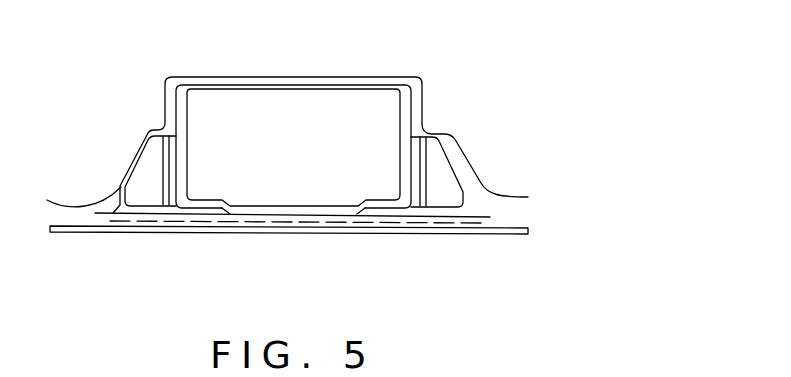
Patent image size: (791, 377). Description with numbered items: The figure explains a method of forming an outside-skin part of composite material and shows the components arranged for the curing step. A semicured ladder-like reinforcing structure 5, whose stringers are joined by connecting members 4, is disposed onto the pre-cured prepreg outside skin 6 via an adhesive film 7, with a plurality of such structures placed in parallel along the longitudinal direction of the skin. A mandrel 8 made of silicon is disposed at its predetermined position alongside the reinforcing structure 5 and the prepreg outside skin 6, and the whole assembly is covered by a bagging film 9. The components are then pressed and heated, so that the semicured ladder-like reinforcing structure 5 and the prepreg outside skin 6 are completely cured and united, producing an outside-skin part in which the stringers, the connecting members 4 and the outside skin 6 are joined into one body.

The connecting member 4 is at (335, 127).
The ladder-like reinforcing structure 5 is at (168, 207).
The prepreg outside skin 6 is at (346, 228).
The adhesive film 7 is at (271, 222).
The mandrel 8 is at (147, 197).
The bagging film 9 is at (123, 161).